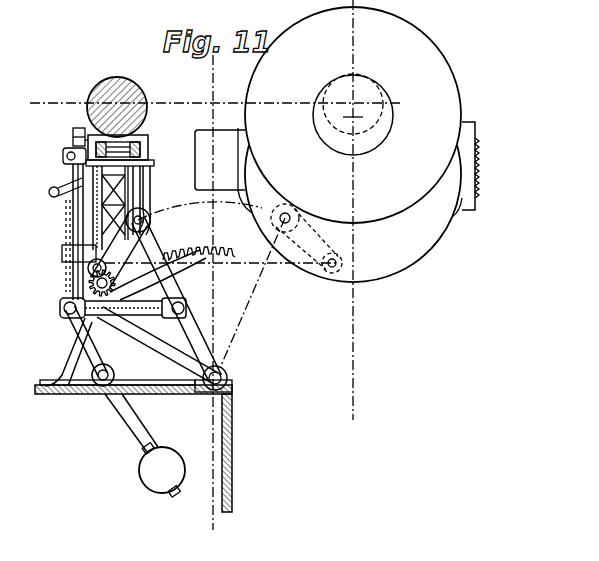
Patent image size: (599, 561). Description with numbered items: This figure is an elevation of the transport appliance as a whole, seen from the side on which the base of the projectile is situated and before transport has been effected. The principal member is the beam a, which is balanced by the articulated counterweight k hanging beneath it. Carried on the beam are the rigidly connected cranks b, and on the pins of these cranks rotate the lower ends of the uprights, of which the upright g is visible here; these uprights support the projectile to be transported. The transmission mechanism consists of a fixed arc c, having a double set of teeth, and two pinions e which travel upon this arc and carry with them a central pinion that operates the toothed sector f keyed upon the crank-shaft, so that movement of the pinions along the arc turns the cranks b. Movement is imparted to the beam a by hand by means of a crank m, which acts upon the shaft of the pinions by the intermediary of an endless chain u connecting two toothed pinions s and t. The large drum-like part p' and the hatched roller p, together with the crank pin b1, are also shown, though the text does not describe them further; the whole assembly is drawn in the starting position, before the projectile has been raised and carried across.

The pulley p is at (123, 107).
The drum p' is at (337, 144).
The upright g is at (80, 128).
The crank m is at (63, 150).
The toothed pinion s is at (70, 190).
The toothed sector f is at (151, 200).
The crank b is at (120, 248).
The endless chain u is at (71, 254).
The toothed pinion t is at (88, 270).
The fixed arc c is at (162, 273).
The beam a is at (182, 304).
The pinion e is at (121, 319).
The crank pin b1 is at (300, 253).
The articulated counterweight k is at (145, 445).